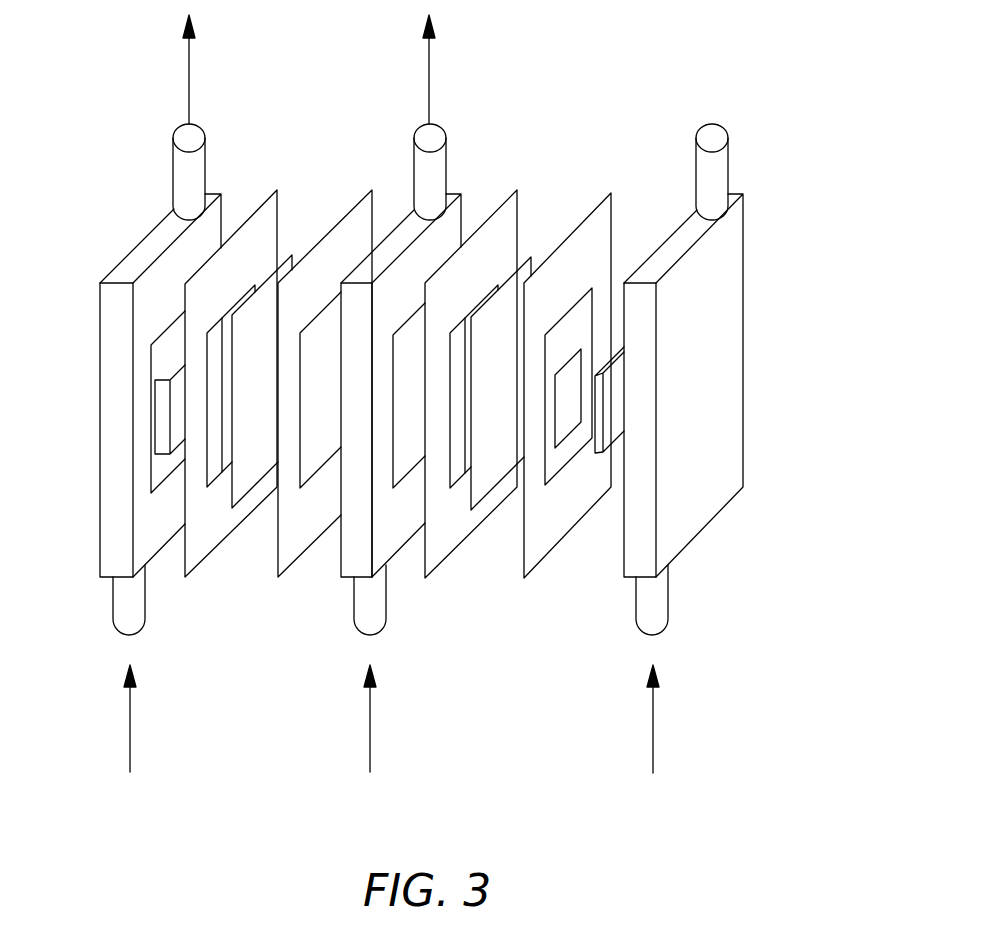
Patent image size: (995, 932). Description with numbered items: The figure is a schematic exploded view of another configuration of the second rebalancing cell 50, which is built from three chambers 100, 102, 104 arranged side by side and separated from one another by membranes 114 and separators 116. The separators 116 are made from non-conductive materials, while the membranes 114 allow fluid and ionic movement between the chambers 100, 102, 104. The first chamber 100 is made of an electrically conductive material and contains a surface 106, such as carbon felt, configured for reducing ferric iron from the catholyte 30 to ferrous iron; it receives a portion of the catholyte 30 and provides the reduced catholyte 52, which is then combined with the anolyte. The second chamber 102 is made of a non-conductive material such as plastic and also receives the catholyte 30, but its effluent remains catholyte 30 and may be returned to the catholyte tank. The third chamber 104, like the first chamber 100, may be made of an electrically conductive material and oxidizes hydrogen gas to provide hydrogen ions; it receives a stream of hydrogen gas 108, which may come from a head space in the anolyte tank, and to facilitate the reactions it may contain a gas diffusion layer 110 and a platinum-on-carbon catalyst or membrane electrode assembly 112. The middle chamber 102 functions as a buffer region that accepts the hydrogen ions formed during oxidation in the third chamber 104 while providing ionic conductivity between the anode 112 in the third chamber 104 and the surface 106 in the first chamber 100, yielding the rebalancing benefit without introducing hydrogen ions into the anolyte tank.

The catholyte 30 is at (428, 68).
The second rebalancing cell 50 is at (818, 125).
The reduced catholyte 52 is at (189, 68).
The first chamber 100 is at (125, 273).
The second chamber 102 is at (458, 192).
The third chamber 104 is at (733, 232).
The surface 106 is at (163, 425).
The stream of hydrogen gas 108 is at (653, 773).
The gas diffusion layer 110 is at (567, 410).
The membrane electrode assembly 112 is at (617, 382).
The membranes 114 is at (243, 480).
The separators 116 is at (262, 237).